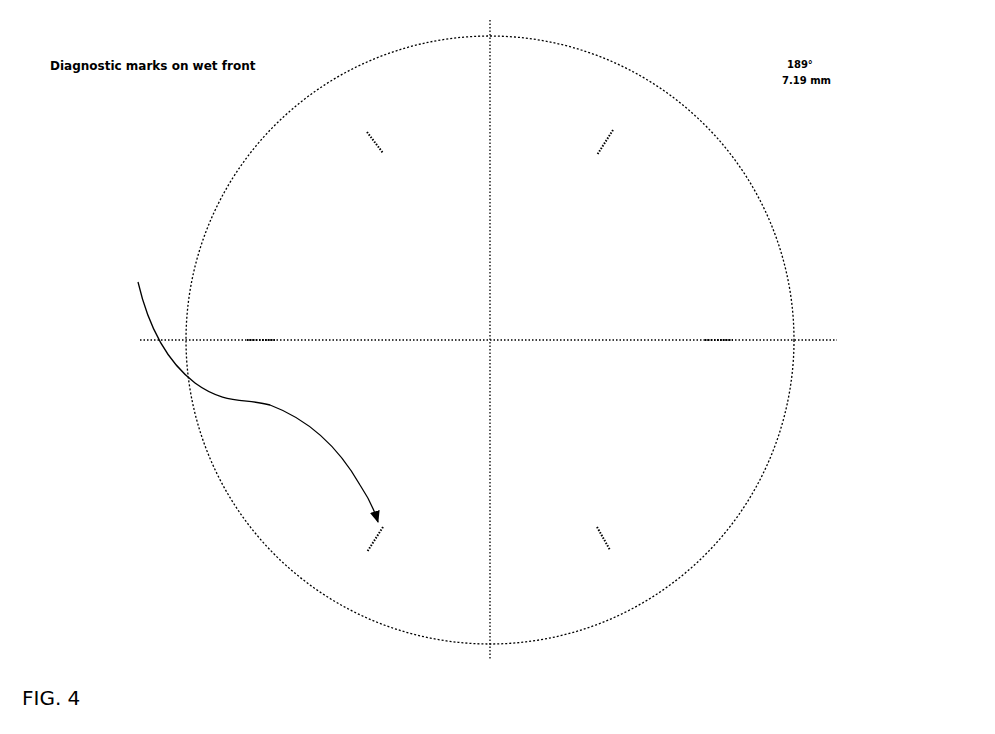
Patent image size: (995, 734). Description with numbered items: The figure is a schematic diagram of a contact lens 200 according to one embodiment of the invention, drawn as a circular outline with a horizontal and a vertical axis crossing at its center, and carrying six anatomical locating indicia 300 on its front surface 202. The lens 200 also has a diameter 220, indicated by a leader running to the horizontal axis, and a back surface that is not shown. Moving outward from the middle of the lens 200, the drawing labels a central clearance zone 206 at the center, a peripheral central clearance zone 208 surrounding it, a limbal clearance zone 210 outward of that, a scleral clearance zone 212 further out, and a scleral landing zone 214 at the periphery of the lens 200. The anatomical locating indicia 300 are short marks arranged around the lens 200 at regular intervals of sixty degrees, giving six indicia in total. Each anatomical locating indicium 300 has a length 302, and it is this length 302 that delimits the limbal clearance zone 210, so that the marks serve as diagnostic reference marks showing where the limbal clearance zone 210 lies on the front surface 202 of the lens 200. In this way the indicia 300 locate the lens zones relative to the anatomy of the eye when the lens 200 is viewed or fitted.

The contact lens 200 is at (240, 525).
The front surface 202 is at (233, 445).
The central clearance zone 206 is at (494, 348).
The peripheral central clearance zone 208 is at (627, 350).
The limbal clearance zone 210 is at (722, 314).
The scleral clearance zone 212 is at (752, 284).
The scleral landing zone 214 is at (750, 202).
The diameter 220 is at (392, 340).
The anatomical locating indicia 300 is at (352, 148).
The length 302 is at (600, 138).